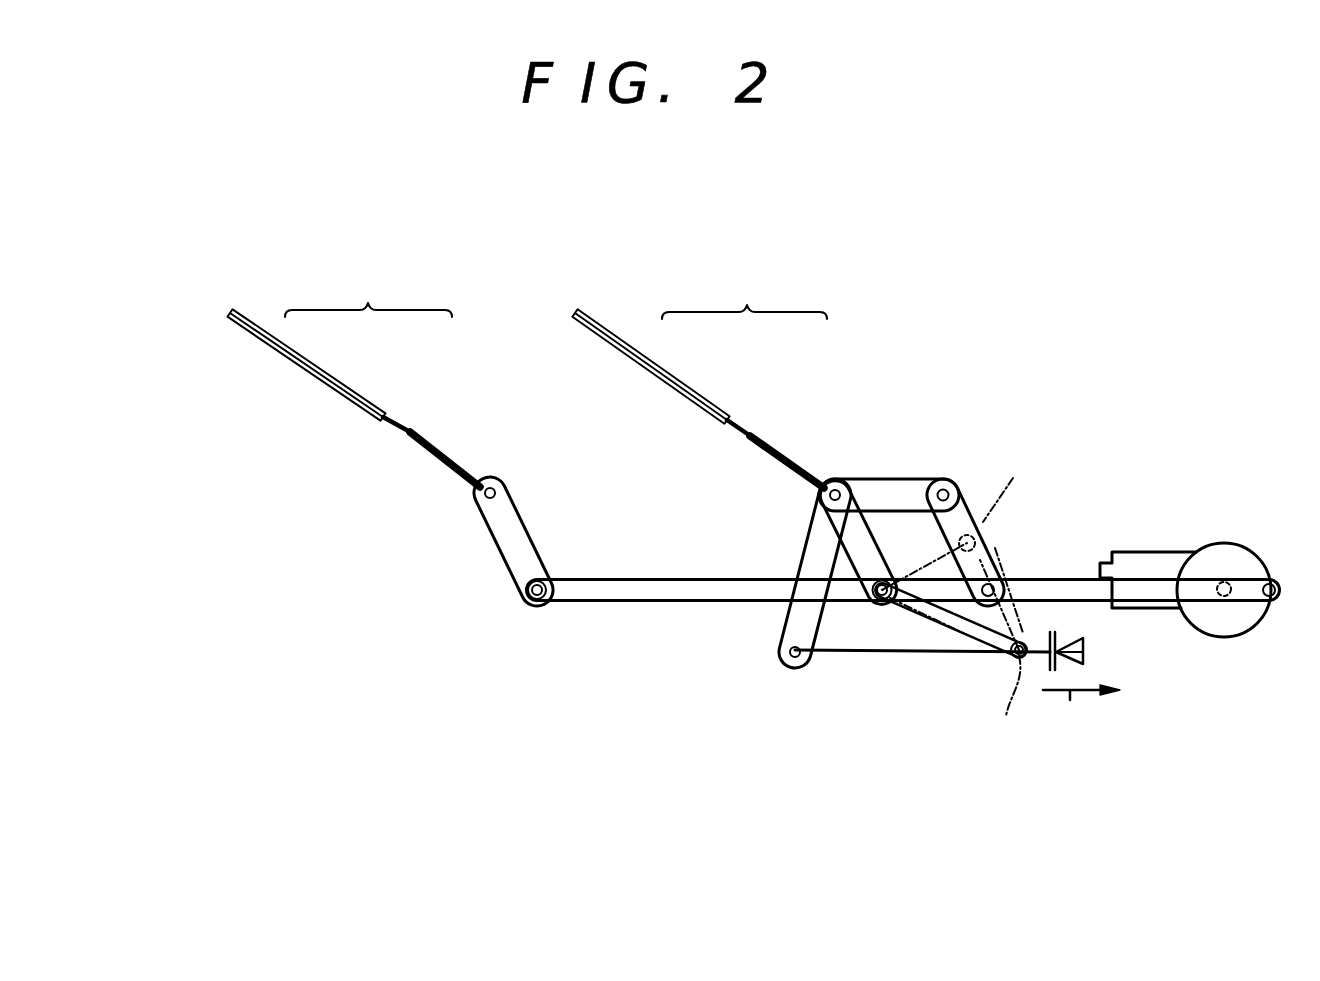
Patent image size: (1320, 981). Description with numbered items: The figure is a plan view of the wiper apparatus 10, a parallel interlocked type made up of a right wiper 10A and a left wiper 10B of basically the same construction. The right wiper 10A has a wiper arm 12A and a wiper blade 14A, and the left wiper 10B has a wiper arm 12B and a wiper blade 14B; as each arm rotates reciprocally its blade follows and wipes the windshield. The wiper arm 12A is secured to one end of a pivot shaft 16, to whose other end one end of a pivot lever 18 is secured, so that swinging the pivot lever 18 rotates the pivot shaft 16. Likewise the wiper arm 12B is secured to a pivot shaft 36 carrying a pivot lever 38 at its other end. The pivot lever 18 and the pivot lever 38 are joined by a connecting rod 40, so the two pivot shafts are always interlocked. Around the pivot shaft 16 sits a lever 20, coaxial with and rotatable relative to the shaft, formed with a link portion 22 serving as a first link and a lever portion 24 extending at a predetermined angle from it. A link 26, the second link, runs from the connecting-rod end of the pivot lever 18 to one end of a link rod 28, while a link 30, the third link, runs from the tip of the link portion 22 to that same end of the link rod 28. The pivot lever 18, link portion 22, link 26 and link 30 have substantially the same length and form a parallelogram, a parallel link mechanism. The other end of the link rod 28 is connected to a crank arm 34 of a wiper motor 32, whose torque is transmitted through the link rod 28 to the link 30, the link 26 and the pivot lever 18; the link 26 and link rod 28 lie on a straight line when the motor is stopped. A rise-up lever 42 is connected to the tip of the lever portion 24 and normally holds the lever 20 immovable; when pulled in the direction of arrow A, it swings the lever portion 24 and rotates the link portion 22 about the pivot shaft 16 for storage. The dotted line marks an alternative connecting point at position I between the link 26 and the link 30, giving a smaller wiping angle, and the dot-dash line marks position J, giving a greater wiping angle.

The wiper apparatus 10 is at (916, 292).
The right wiper 10A is at (744, 292).
The left wiper 10B is at (368, 291).
The wiper arm 12A is at (760, 438).
The wiper arm 12B is at (433, 443).
The wiper blade 14A is at (672, 374).
The wiper blade 14B is at (327, 380).
The pivot shaft 16 is at (844, 474).
The pivot lever 18 is at (847, 531).
The lever 20 is at (831, 458).
The link portion 22 is at (908, 478).
The lever portion 24 is at (810, 559).
The link 26 is at (930, 557).
The link rod 28 is at (1036, 598).
The link 30 is at (968, 500).
The wiper motor 32 is at (1213, 547).
The crank arm 34 is at (1249, 579).
The pivot shaft 36 is at (492, 484).
The pivot lever 38 is at (498, 535).
The connecting rod 40 is at (648, 603).
The rise-up lever 42 is at (965, 653).
The position I is at (1005, 487).
The position J is at (1009, 700).
The arrow A is at (1081, 683).